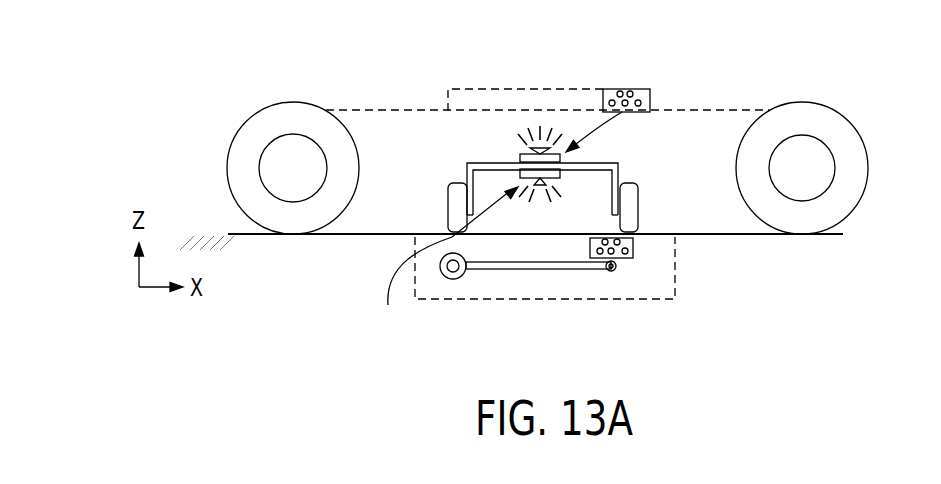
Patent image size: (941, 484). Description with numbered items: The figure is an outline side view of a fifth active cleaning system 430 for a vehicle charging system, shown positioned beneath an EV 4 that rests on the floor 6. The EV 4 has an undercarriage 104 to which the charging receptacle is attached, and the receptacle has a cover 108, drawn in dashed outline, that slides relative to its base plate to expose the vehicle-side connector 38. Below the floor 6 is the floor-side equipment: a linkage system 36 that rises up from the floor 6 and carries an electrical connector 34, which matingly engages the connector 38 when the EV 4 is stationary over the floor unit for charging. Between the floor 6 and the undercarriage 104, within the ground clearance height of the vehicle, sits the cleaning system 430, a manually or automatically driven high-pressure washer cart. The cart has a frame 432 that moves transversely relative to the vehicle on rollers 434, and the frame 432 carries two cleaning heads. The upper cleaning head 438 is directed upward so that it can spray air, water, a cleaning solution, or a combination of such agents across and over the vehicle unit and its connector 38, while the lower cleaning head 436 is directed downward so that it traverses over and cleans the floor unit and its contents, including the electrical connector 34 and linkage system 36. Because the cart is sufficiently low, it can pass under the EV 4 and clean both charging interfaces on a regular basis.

The EV 4 is at (852, 145).
The floor 6 is at (205, 234).
The electrical connector 34 is at (633, 250).
The linkage system 36 is at (530, 270).
The connector 38 is at (627, 89).
The undercarriage 104 is at (745, 105).
The cover 108 is at (448, 97).
The cleaning system 430 is at (628, 161).
The frame 432 is at (468, 170).
The rollers 434 is at (453, 220).
The lower cleaning head 436 is at (445, 262).
The upper cleaning head 438 is at (648, 104).